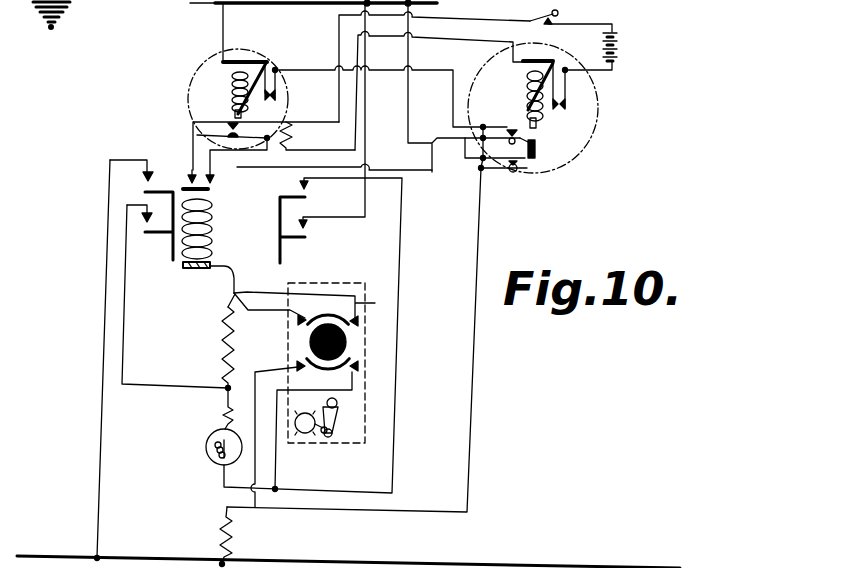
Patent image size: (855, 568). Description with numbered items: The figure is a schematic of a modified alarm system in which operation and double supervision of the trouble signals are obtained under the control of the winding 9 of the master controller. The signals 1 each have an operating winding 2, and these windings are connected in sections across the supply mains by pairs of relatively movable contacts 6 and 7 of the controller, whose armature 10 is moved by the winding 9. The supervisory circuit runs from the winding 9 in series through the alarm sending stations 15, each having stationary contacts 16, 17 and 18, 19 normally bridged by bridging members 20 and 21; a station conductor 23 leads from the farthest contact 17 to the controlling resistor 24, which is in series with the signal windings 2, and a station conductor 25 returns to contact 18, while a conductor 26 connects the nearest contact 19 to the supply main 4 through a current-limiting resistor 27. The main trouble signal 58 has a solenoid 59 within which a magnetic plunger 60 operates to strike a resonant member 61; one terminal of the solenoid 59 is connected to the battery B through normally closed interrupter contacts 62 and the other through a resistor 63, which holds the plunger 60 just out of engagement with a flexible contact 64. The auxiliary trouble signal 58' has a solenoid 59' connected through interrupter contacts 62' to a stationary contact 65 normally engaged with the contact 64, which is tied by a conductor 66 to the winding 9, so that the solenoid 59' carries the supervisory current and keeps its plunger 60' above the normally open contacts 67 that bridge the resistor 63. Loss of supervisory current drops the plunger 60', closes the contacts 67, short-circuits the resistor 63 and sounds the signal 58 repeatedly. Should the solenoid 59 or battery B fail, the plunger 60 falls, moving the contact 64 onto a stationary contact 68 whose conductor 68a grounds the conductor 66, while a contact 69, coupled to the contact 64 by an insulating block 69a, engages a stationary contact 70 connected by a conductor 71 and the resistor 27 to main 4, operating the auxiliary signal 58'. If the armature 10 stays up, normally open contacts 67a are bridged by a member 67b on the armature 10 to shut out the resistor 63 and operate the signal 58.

The signal 1 is at (208, 464).
The operating winding 2 is at (217, 445).
The supply main 4 is at (191, 561).
The movable contact 6 is at (293, 197).
The movable contact 7 is at (145, 211).
The winding 9 is at (182, 247).
The armature 10 is at (210, 268).
The alarm sending station 15 is at (385, 305).
The stationary contact 16 is at (298, 319).
The stationary contact 17 is at (360, 323).
The stationary contact 18 is at (360, 368).
The stationary contact 19 is at (297, 366).
The bridging member 20 is at (332, 322).
The bridging member 21 is at (333, 372).
The station conductor 23 is at (313, 284).
The controlling resistor 24 is at (226, 351).
The station conductor 25 is at (335, 380).
The conductor 26 is at (255, 465).
The current-limiting resistor 27 is at (232, 535).
The main trouble signal 58 is at (546, 108).
The auxiliary trouble signal 58' is at (230, 99).
The solenoid 59 is at (524, 91).
The solenoid 59' is at (227, 75).
The magnetic plunger 60 is at (550, 128).
The magnetic plunger 60' is at (204, 105).
The resonant member 61 is at (546, 24).
The interrupter contacts 62 is at (588, 86).
The interrupter contacts 62' is at (286, 74).
The resistor 63 is at (292, 136).
The flexible contact 64 is at (536, 144).
The stationary contact 65 is at (496, 127).
The conductor 66 is at (432, 172).
The normally open contacts 67 is at (227, 128).
The normally open contacts 67a is at (192, 165).
The bridging member 67b is at (206, 172).
The stationary contact 68 is at (512, 142).
The conductor 68a is at (348, 111).
The contact 69 is at (503, 172).
The insulating block 69a is at (537, 152).
The stationary contact 70 is at (518, 173).
The conductor 71 is at (472, 331).
The battery B is at (622, 50).